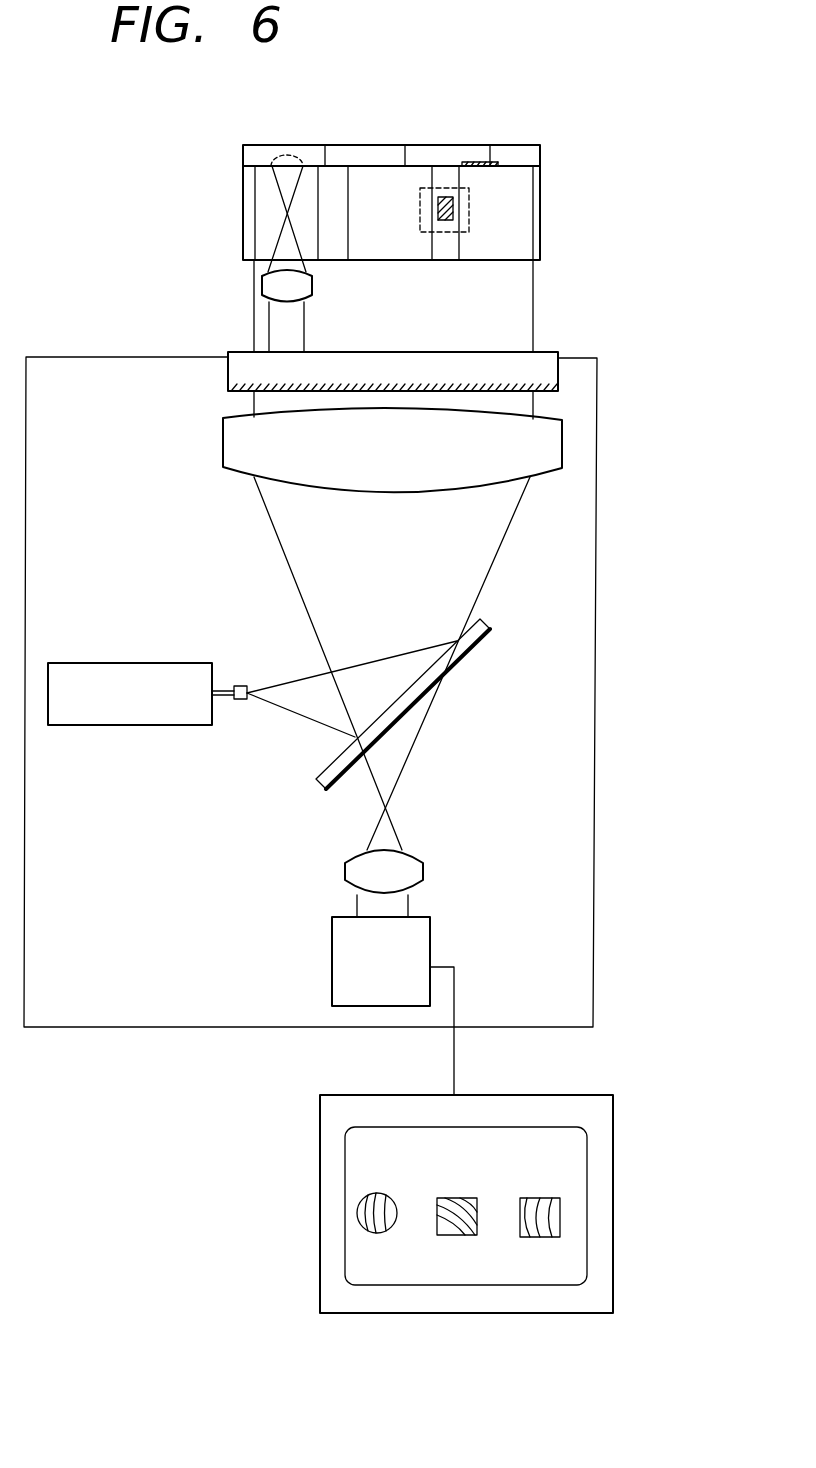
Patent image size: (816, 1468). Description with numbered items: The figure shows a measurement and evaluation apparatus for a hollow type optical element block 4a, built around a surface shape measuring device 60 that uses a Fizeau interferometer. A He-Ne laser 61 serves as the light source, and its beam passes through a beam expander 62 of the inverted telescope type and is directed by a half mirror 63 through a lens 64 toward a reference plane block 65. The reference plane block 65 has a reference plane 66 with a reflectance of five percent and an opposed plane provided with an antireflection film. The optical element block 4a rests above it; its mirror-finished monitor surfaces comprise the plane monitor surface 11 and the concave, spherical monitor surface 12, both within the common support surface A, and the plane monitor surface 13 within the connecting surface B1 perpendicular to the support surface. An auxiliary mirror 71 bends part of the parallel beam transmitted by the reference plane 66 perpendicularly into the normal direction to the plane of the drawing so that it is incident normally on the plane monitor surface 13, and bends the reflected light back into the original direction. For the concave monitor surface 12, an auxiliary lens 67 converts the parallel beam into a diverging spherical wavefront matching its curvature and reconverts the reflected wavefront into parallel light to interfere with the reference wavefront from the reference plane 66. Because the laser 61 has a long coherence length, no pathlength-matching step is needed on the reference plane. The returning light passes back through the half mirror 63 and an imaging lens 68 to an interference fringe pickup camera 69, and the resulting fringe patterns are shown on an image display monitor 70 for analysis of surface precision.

The common support surface A is at (512, 143).
The optical element block 4a is at (542, 148).
The monitor surface 11 is at (477, 160).
The monitor surface 12 is at (293, 158).
The monitor surface 13 is at (447, 193).
The auxiliary mirror 71 is at (423, 233).
The connecting surface B1 is at (447, 255).
The auxiliary lens 67 is at (262, 285).
The surface shape measuring device 60 is at (600, 375).
The reference plane block 65 is at (553, 340).
The reference plane 66 is at (543, 391).
The objective lens 64 is at (563, 447).
The He-Ne laser 61 is at (142, 663).
The beam expander 62 is at (240, 700).
The half mirror 63 is at (480, 640).
The imaging lens 68 is at (423, 870).
The interference fringe pickup camera 69 is at (432, 943).
The image display monitor 70 is at (615, 1170).